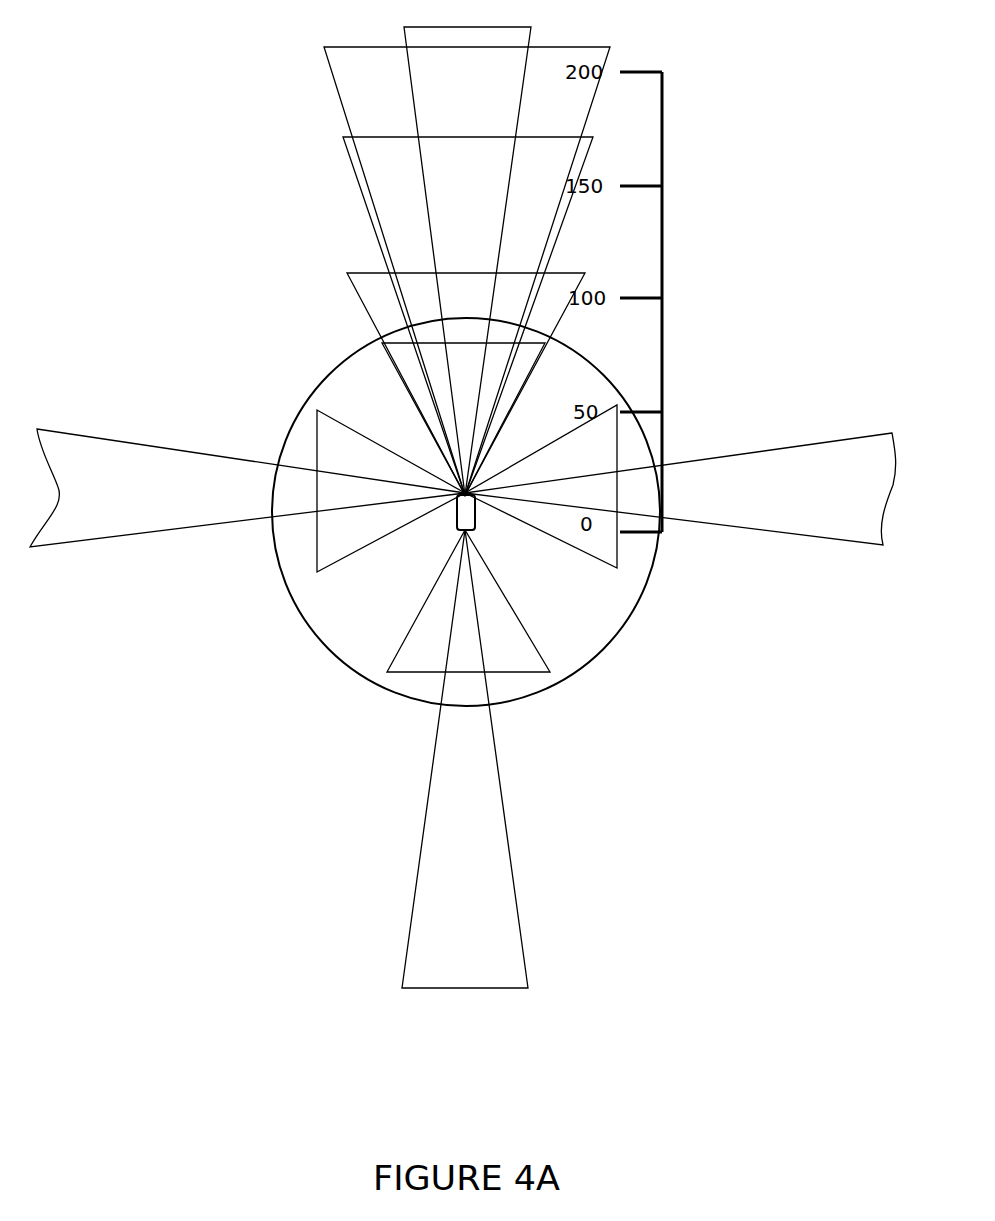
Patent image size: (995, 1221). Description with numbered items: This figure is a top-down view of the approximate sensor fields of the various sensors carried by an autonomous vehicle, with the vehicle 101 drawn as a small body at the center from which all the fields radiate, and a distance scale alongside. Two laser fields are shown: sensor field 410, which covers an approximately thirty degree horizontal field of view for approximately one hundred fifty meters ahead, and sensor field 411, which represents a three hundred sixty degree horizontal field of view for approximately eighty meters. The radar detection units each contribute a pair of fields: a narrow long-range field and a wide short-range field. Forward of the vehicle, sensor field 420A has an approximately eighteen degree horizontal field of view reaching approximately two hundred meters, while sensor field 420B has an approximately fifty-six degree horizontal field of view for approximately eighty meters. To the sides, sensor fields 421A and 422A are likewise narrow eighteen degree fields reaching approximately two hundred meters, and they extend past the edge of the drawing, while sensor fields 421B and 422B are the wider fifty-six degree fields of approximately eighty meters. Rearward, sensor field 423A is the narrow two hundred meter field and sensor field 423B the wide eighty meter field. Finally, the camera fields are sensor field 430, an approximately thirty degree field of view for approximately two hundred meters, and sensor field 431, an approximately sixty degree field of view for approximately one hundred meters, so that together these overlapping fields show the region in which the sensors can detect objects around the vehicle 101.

The sensor device 101 is at (456, 517).
The sensor field 410 is at (375, 233).
The sensor field 411 is at (360, 305).
The sensor field 420A is at (425, 193).
The sensor field 420B is at (400, 395).
The sensor field 421A is at (187, 448).
The sensor field 421B is at (313, 417).
The sensor field 422A is at (700, 457).
The sensor field 422B is at (620, 540).
The sensor field 423A is at (422, 832).
The sensor field 423B is at (396, 655).
The sensor field 430 is at (338, 90).
The sensor field 431 is at (283, 447).